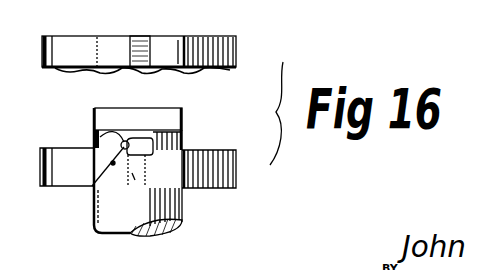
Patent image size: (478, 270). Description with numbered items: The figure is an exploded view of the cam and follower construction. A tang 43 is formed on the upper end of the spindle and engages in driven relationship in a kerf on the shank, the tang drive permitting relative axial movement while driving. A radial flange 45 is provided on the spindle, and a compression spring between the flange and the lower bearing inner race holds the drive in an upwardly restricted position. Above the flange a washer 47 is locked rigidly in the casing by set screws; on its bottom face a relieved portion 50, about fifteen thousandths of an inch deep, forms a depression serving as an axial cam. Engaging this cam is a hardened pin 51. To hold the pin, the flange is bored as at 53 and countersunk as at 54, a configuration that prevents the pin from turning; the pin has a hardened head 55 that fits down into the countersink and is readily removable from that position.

The tang 43 is at (143, 114).
The radial flange 45 is at (207, 189).
The washer 47 is at (234, 42).
The relieved portion 50 is at (103, 70).
The hardened pin 51 is at (92, 186).
The bore 53 is at (131, 188).
The countersink 54 is at (98, 134).
The hardened head 55 is at (152, 143).